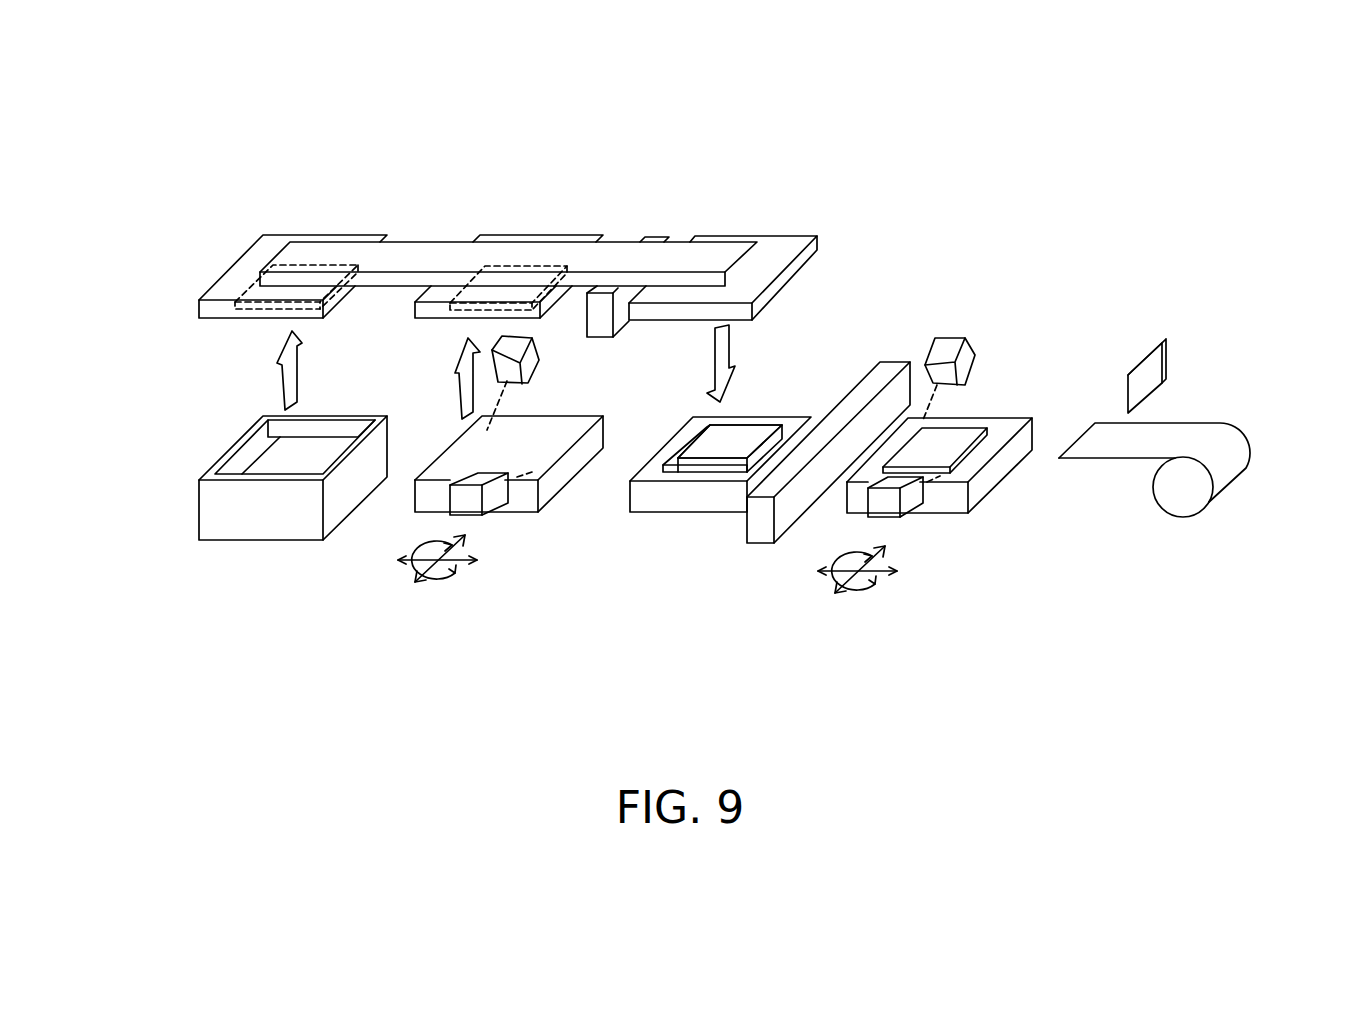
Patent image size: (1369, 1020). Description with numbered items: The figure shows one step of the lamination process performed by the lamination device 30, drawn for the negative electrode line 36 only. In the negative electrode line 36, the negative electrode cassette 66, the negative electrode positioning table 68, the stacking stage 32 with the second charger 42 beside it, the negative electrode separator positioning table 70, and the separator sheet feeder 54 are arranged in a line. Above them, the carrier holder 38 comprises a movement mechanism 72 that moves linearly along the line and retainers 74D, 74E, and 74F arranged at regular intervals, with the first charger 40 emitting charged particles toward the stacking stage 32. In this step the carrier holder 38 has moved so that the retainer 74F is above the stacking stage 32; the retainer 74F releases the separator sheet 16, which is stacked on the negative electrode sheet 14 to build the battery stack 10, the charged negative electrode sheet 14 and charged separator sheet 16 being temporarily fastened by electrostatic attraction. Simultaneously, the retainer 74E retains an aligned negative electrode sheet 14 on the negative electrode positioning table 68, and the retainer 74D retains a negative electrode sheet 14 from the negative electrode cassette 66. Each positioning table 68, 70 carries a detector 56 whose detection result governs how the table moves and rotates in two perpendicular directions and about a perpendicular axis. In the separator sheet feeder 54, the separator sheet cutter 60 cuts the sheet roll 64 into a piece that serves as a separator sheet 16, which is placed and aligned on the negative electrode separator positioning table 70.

The lamination device 30 is at (140, 99).
The carrier holder 38 is at (318, 186).
The movement mechanism 72 is at (421, 262).
The retainer 74D is at (229, 291).
The retainer 74E is at (433, 309).
The retainer 74F is at (765, 273).
The first charger 40 is at (599, 337).
The negative electrode sheet 14 is at (302, 297).
The negative electrode line 36 is at (137, 390).
The negative electrode cassette 66 is at (289, 521).
The negative electrode positioning table 68 is at (550, 491).
The detector 56 is at (528, 372).
The stacking stage 32 is at (679, 502).
The second charger 42 is at (768, 524).
The separator sheet 16 is at (742, 425).
The battery stack 10 is at (730, 441).
The negative electrode separator positioning table 70 is at (1010, 458).
The separator sheet feeder 54 is at (1278, 342).
The sheet roll 64 is at (1180, 445).
The separator sheet cutter 60 is at (1150, 372).